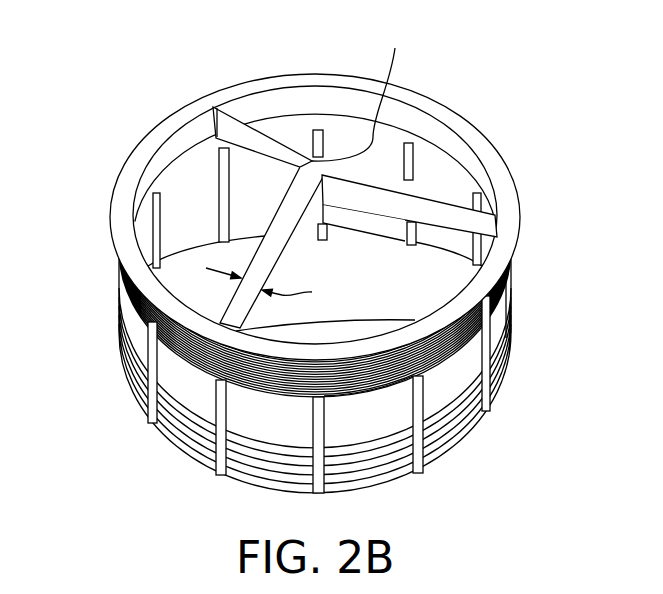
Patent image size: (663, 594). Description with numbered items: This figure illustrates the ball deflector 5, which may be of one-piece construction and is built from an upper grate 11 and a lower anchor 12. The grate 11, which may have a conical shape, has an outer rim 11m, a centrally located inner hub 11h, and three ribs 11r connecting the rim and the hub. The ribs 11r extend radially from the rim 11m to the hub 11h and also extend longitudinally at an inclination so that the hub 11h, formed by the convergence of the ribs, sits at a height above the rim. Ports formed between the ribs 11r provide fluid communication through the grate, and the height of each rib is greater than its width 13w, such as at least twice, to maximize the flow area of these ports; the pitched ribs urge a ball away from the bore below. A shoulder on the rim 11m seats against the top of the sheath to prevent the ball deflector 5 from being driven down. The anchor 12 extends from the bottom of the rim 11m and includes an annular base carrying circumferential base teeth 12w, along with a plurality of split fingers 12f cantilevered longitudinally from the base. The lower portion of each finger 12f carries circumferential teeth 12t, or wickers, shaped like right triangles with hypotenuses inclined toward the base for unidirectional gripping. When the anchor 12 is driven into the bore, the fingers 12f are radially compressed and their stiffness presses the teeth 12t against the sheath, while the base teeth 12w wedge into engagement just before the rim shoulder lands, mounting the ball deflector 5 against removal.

The ball deflector 5 is at (260, 279).
The upper grate 11 is at (315, 191).
The outer rim 11m is at (122, 200).
The inner hub 11h is at (366, 92).
The ribs 11r is at (285, 247).
The width of rib 13w is at (280, 286).
The lower anchor 12 is at (255, 354).
The base teeth 12w is at (133, 303).
The finger teeth 12t is at (180, 447).
The split fingers 12f is at (381, 433).